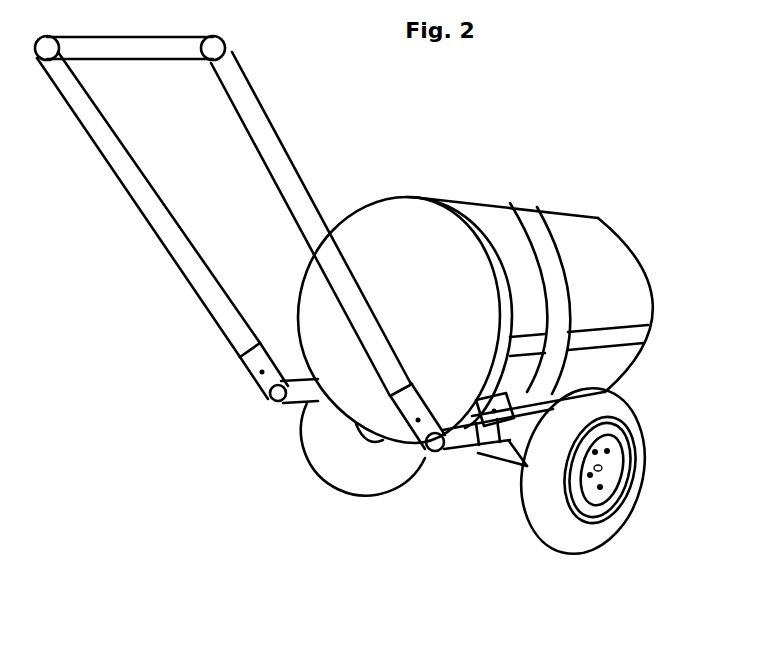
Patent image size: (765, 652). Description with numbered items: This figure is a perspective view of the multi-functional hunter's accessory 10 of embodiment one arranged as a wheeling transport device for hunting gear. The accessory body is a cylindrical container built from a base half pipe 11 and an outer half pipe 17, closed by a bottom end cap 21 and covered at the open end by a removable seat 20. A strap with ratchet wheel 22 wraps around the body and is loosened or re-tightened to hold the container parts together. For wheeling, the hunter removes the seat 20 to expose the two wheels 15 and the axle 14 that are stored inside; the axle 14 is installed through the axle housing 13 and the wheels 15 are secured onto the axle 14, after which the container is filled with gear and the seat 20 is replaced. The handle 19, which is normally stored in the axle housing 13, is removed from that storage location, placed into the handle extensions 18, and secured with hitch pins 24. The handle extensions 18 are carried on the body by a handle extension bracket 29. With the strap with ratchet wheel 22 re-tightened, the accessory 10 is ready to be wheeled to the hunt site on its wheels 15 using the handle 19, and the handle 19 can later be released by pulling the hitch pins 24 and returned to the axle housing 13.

The multi-functional hunter's accessory 10 is at (563, 158).
The base half pipe 11 is at (637, 370).
The axle housing 13 is at (520, 467).
The axle 14 is at (600, 466).
The wheels 15 is at (590, 548).
The outer half pipe 17 is at (650, 278).
The handle extension 18 is at (303, 403).
The handle 19 is at (107, 155).
The seat 20 is at (368, 198).
The bottom end cap 21 is at (613, 223).
The strap with ratchet wheel 22 is at (513, 207).
The hitch pins 24 is at (250, 375).
The handle extension bracket 29 is at (483, 452).